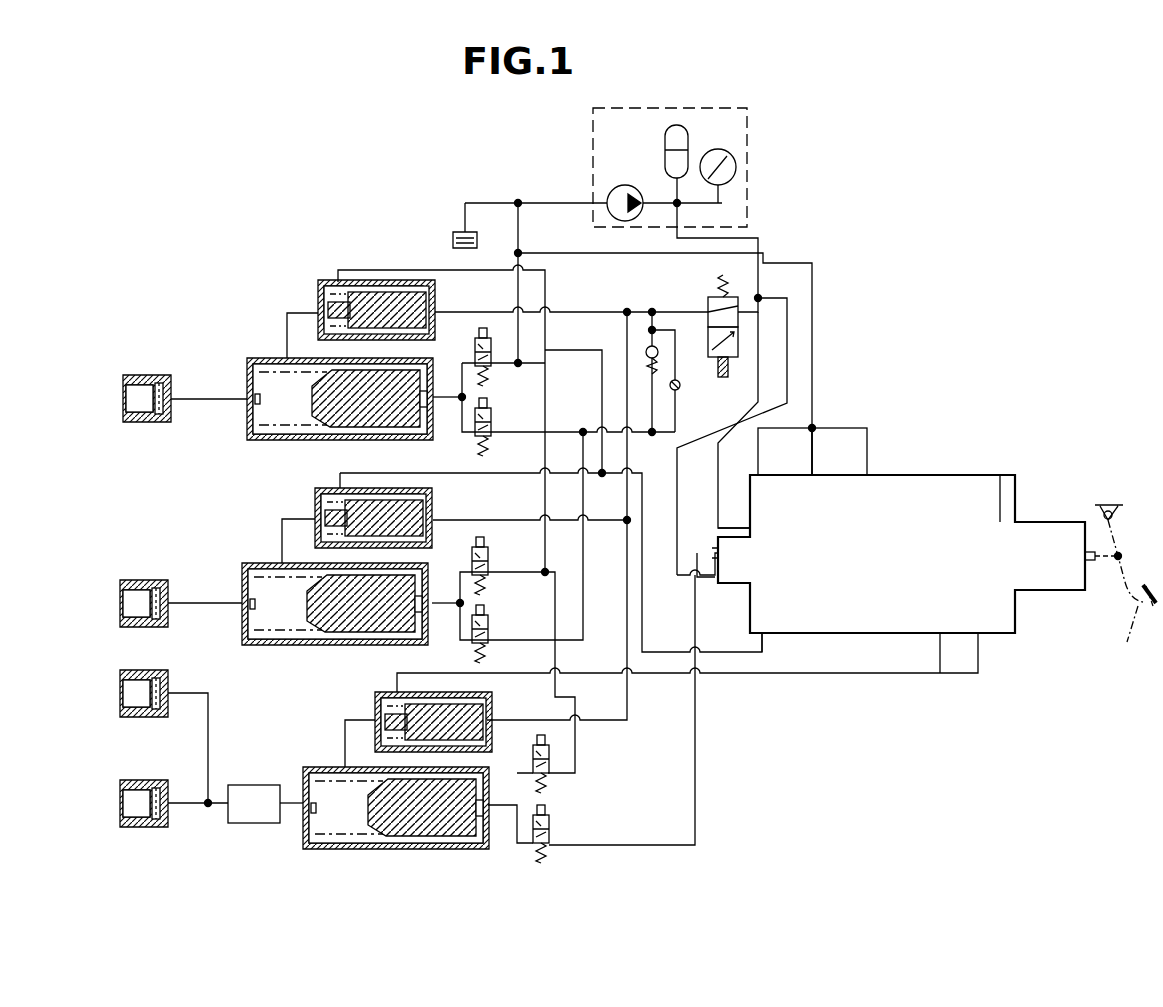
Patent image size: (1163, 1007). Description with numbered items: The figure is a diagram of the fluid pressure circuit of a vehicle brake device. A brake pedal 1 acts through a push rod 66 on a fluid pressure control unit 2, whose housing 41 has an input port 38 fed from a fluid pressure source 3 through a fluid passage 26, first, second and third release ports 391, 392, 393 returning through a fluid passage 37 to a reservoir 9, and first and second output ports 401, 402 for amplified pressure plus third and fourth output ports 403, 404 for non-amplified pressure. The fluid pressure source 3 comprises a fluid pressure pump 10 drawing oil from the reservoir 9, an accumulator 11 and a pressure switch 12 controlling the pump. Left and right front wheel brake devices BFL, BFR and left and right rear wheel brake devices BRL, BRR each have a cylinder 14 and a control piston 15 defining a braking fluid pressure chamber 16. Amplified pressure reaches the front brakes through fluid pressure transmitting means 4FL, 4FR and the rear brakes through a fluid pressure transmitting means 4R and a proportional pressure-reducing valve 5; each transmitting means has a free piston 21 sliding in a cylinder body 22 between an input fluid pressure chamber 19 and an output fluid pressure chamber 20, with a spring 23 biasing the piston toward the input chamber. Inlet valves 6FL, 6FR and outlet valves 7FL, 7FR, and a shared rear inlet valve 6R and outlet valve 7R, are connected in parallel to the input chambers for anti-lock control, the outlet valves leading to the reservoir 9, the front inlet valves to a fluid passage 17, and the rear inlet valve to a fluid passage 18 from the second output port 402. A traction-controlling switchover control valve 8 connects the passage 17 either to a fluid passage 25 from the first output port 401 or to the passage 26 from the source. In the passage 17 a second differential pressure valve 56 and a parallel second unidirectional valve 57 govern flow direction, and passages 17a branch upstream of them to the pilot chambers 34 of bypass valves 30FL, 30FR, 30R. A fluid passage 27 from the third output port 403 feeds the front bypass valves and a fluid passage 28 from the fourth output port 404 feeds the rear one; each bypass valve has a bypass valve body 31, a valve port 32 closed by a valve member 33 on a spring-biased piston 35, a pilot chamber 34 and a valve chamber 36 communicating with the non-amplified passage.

The brake pedal 1 is at (1132, 618).
The fluid pressure control unit 2 is at (882, 557).
The fluid pressure source 3 is at (593, 180).
The fluid pressure transmitting means 4FL is at (292, 445).
The fluid pressure transmitting means 4FR is at (312, 648).
The fluid pressure transmitting means 4R is at (302, 760).
The proportional pressure-reducing valve 5 is at (256, 790).
The inlet valve 6FL is at (492, 425).
The inlet valve 6FR is at (489, 635).
The inlet valve 6R is at (549, 836).
The outlet valve 7FL is at (474, 355).
The outlet valve 7FR is at (489, 562).
The outlet valve 7R is at (533, 758).
The traction-controlling switchover control valve 8 is at (706, 300).
The reservoir 9 is at (455, 231).
The fluid pressure pump 10 is at (630, 186).
The accumulator 11 is at (665, 142).
The pressure switch 12 is at (718, 149).
The cylinder 14 is at (152, 385).
The control piston 15 is at (128, 422).
The braking fluid pressure chamber 16 is at (172, 398).
The fluid passage 17 is at (674, 310).
The passages 17a is at (622, 312).
The fluid passage 18 is at (698, 712).
The input fluid pressure chamber 19 is at (430, 428).
The output fluid pressure chamber 20 is at (258, 402).
The free piston 21 is at (328, 422).
The cylinder body 22 is at (370, 425).
The spring 23 is at (255, 436).
The fluid passage 25 is at (735, 402).
The fluid passage 26 is at (716, 490).
The fluid passage 27 is at (665, 596).
The fluid passage 28 is at (830, 674).
The bypass valve 30FL is at (322, 268).
The bypass valve 30FR is at (440, 497).
The bypass valve 30R is at (370, 694).
The bypass valve body 31 is at (318, 288).
The valve port 32 is at (318, 306).
The valve member 33 is at (350, 278).
The pilot chamber 34 is at (436, 310).
The piston 35 is at (398, 290).
The valve chamber 36 is at (287, 322).
The fluid passage 37 is at (814, 328).
The input port 38 is at (748, 525).
The first release port 391 is at (870, 472).
The second release port 392 is at (828, 474).
The third release port 393 is at (768, 474).
The first output port 401 is at (715, 582).
The second output port 402 is at (720, 551).
The third output port 403 is at (766, 637).
The fourth output port 404 is at (978, 640).
The housing 41 is at (967, 485).
The second differential pressure valve 56 is at (645, 350).
The second unidirectional valve 57 is at (680, 388).
The push rod 66 is at (1097, 562).
The left front wheel brake device BFL is at (133, 360).
The right front wheel brake device BFR is at (138, 568).
The left rear wheel brake device BRL is at (175, 668).
The right rear wheel brake device BRR is at (168, 775).